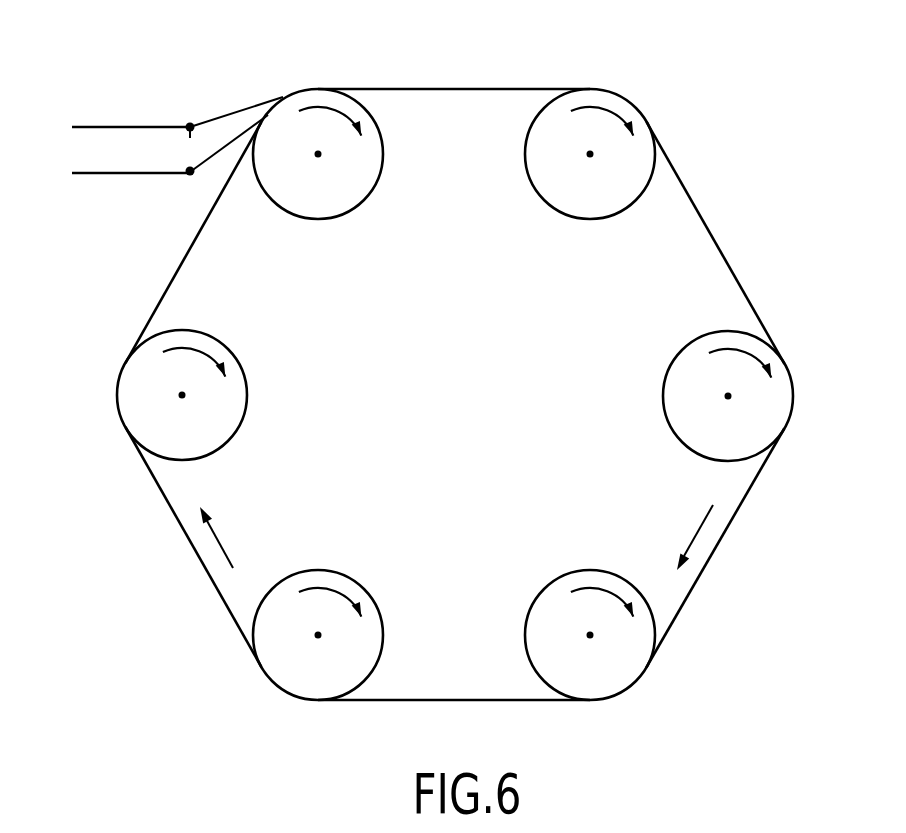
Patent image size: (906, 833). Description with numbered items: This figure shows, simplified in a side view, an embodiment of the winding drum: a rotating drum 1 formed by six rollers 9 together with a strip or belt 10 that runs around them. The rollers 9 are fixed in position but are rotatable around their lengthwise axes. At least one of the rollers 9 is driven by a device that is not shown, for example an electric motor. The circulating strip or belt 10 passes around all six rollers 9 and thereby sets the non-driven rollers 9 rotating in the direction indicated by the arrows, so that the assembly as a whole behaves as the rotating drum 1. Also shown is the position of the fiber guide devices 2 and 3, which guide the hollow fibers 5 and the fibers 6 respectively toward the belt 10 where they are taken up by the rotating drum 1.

The rotating drum 1 is at (445, 409).
The fiber guide device 2 is at (188, 176).
The fiber guide device 3 is at (189, 122).
The hollow fibers 5 is at (117, 176).
The fibers 6 is at (117, 126).
The rollers 9 is at (618, 100).
The strip or belt 10 is at (716, 242).